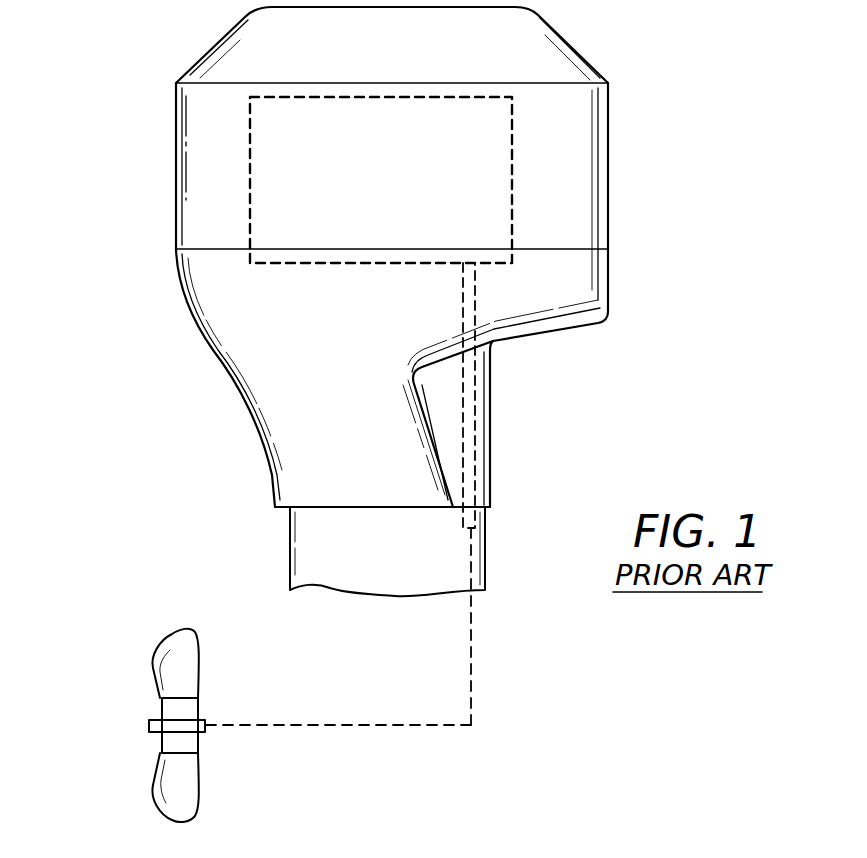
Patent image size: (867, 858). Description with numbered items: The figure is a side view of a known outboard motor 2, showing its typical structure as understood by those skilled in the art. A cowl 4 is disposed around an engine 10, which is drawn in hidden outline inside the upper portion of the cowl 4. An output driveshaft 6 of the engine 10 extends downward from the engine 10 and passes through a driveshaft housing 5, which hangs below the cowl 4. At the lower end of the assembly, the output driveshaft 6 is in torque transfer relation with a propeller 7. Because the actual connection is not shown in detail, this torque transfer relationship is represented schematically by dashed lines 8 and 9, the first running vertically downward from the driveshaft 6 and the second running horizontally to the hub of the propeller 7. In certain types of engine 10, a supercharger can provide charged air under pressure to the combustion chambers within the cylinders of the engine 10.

The outboard motor 2 is at (124, 54).
The cowl 4 is at (567, 40).
The driveshaft housing 5 is at (290, 550).
The output driveshaft 6 is at (475, 430).
The propeller 7 is at (157, 783).
The dashed line 8 is at (471, 672).
The dashed line 9 is at (298, 727).
The engine 10 is at (512, 172).